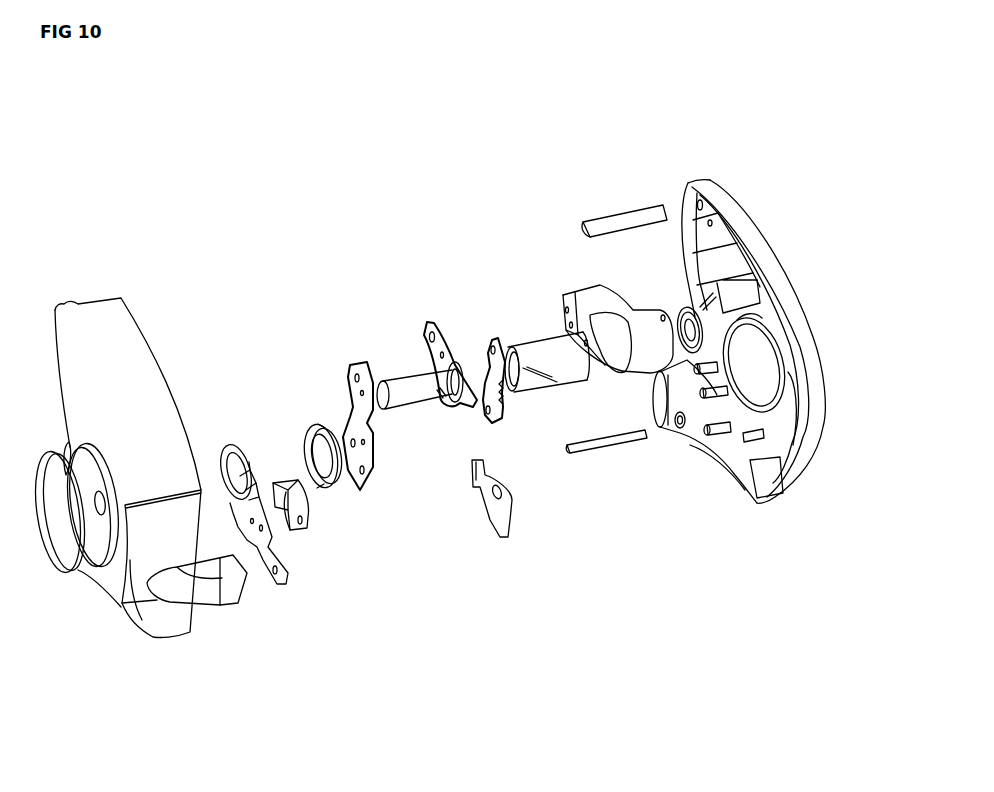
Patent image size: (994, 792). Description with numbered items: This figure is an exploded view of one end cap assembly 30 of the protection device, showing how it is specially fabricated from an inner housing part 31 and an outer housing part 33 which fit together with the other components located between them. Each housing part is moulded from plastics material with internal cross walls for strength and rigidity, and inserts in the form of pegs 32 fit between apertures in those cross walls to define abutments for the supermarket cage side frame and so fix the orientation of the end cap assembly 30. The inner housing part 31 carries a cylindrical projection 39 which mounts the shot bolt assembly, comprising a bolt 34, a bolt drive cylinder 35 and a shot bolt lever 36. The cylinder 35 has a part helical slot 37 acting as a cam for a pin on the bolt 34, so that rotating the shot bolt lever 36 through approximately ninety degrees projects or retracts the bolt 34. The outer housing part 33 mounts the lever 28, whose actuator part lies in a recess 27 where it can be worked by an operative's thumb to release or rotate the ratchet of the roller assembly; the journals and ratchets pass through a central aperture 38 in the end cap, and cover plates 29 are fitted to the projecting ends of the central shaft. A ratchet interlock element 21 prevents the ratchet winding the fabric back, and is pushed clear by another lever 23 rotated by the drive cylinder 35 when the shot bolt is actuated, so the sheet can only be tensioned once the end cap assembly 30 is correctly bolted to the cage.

The end cap assembly 30 is at (273, 235).
The outer housing part 33 is at (67, 340).
The recess 27 is at (175, 512).
The cover plate 29 is at (50, 533).
The central aperture 38 is at (115, 545).
The lever 28 is at (233, 603).
The lever 23 is at (490, 520).
The bolt 34 is at (403, 382).
The ratchet interlock element 21 is at (493, 337).
The part helical slot 37 is at (530, 345).
The bolt drive cylinder 35 is at (527, 383).
The shot bolt lever 36 is at (580, 293).
The cylindrical projection 39 is at (683, 303).
The peg 32 is at (625, 212).
The inner housing part 31 is at (725, 470).